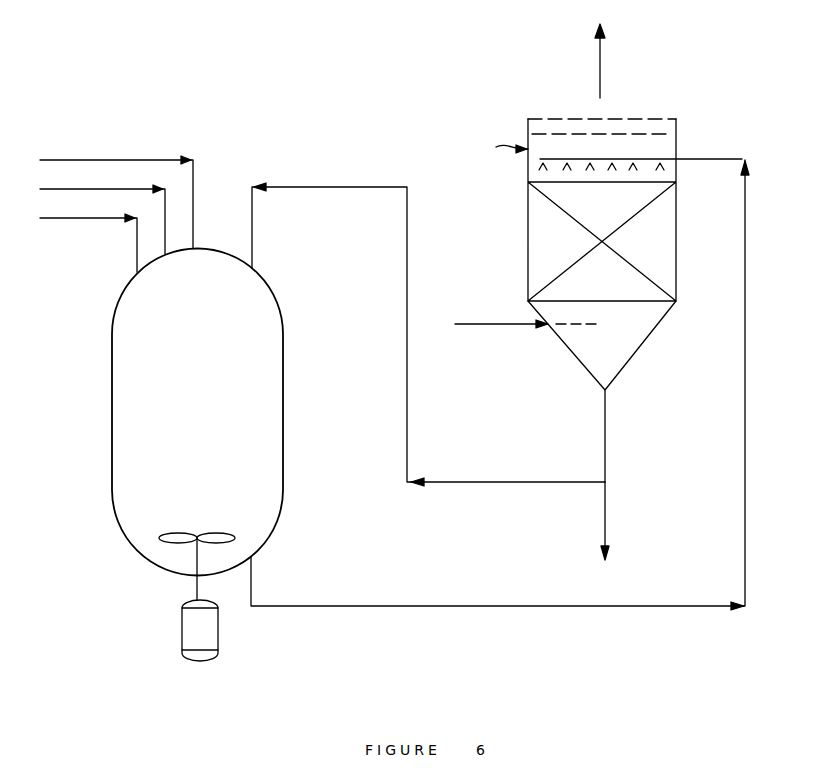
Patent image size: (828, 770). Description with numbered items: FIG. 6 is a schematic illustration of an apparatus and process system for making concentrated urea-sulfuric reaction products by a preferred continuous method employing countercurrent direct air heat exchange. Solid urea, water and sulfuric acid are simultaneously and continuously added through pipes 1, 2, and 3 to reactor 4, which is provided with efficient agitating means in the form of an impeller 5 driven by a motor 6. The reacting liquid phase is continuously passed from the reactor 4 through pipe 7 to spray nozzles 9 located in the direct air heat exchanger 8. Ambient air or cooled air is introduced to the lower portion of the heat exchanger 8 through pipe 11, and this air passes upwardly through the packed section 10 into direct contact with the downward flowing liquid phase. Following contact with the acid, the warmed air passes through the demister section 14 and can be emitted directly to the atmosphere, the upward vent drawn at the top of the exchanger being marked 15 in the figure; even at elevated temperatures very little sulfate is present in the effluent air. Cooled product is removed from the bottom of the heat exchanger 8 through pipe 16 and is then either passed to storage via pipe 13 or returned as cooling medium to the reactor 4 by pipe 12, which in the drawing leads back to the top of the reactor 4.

The pipe 1 is at (103, 200).
The pipe 2 is at (89, 217).
The pipe 3 is at (75, 241).
The reactor 4 is at (112, 378).
The impeller 5 is at (205, 533).
The motor 6 is at (182, 630).
The pipe 7 is at (498, 607).
The direct air heat exchanger 8 is at (504, 151).
The spray nozzles 9 is at (600, 160).
The packed section 10 is at (529, 235).
The pipe 11 is at (495, 325).
The pipe 12 is at (300, 186).
The pipe 13 is at (607, 532).
The demister section 14 is at (655, 126).
The vent line 15 is at (601, 63).
The pipe 16 is at (607, 430).